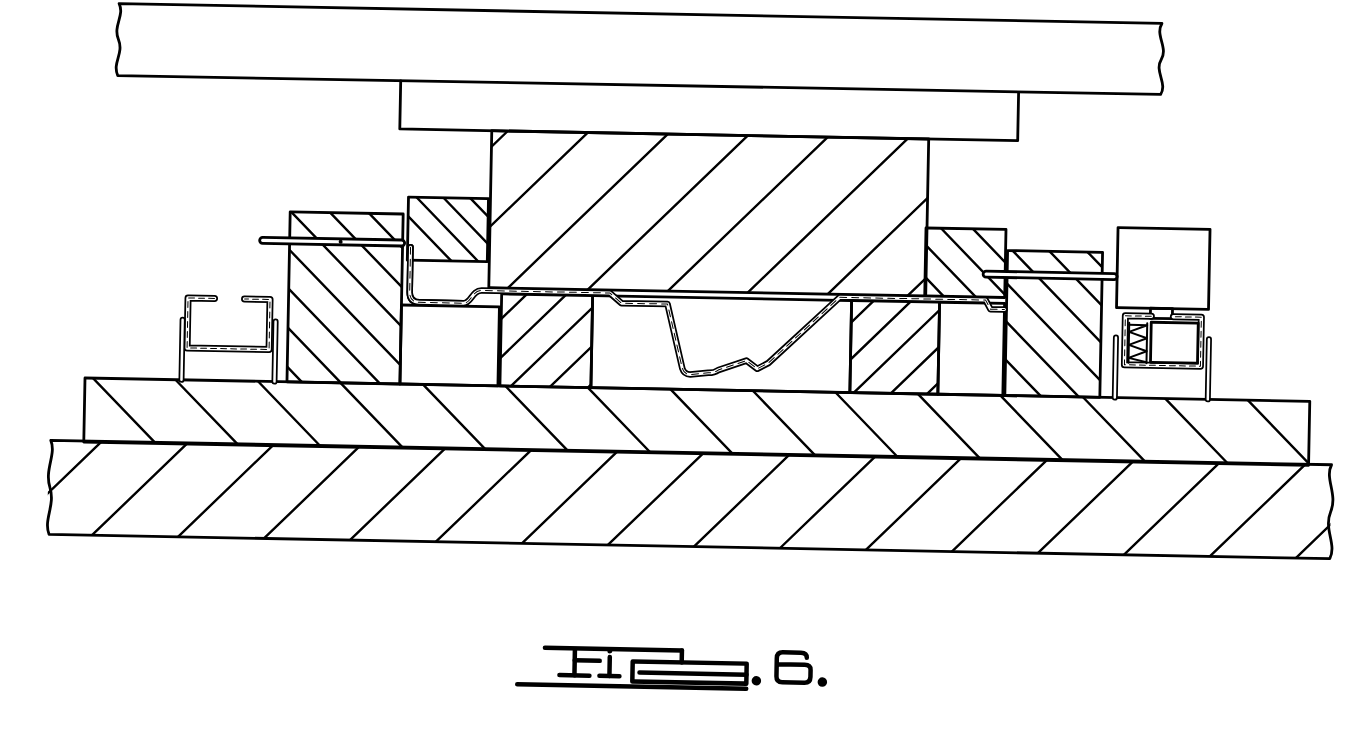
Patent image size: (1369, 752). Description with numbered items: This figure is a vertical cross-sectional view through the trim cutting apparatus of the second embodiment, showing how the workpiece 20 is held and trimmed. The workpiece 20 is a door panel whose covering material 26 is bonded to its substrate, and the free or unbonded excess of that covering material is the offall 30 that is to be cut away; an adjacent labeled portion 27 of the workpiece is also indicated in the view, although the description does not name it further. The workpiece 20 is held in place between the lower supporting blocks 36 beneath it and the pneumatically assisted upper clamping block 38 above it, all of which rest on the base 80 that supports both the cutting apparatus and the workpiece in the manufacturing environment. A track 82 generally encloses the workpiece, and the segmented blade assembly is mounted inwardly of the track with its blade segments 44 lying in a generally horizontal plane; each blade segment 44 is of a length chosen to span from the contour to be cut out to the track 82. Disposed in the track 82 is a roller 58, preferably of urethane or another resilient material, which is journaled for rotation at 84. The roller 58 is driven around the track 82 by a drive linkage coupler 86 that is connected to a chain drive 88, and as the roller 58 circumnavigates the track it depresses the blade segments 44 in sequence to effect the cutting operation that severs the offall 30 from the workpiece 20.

The workpiece 20 is at (700, 327).
The covering material 26 is at (432, 300).
The flange of workpiece 27 is at (422, 283).
The excess portion or offall 30 is at (410, 237).
The lower supporting blocks 36 is at (568, 339).
The upper clamping block 38 is at (737, 196).
The blade segments 44 is at (270, 232).
The roller 58 is at (1157, 219).
The base 80 is at (410, 517).
The track 82 is at (183, 295).
The journal 84 is at (1164, 289).
The drive linkage coupler 86 is at (1185, 329).
The chain drive 88 is at (1141, 343).